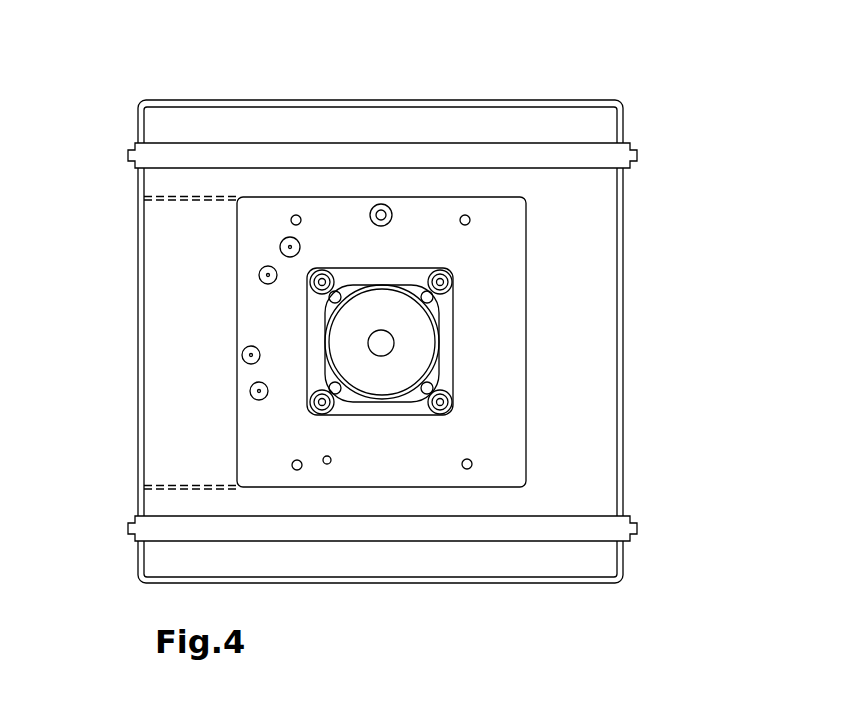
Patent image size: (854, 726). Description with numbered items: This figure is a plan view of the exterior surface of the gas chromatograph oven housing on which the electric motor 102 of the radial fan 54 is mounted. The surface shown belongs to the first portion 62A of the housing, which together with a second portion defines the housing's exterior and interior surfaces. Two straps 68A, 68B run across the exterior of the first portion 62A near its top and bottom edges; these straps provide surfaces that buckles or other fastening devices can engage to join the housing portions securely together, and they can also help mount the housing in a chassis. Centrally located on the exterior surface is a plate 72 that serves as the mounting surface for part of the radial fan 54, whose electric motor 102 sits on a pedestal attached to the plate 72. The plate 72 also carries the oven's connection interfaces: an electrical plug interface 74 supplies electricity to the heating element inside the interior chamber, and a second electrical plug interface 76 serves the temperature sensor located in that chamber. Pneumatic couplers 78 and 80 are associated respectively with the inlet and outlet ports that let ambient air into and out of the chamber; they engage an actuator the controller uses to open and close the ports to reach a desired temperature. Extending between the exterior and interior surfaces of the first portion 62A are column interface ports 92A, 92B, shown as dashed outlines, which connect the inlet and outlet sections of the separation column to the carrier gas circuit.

The radial fan 54 is at (456, 347).
The first portion of the housing 62A is at (605, 478).
The strap 68A is at (582, 525).
The strap 68B is at (582, 151).
The plate 72 is at (440, 460).
The electrical plug interface 74 is at (262, 251).
The electrical plug interface 76 is at (243, 374).
The pneumatic coupler 78 is at (385, 206).
The pneumatic coupler 80 is at (333, 461).
The column interface port 92A is at (158, 487).
The column interface port 92B is at (160, 200).
The electric motor 102 is at (360, 325).